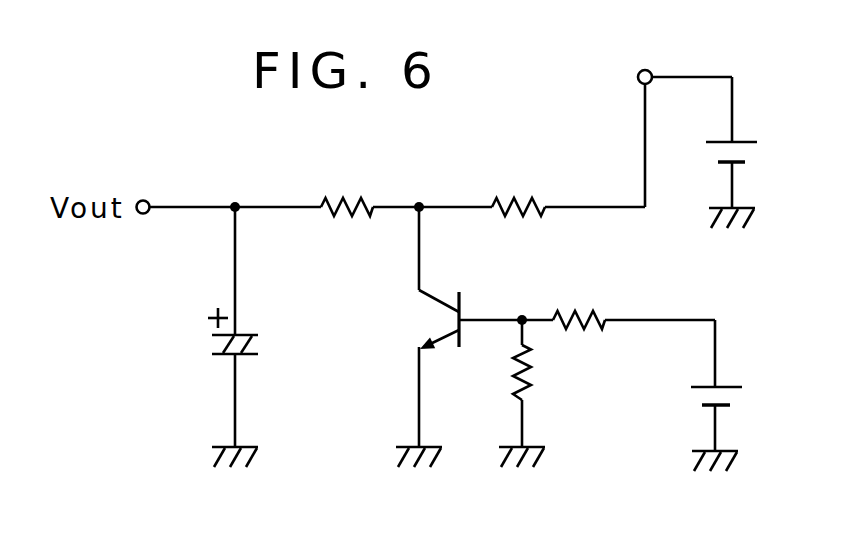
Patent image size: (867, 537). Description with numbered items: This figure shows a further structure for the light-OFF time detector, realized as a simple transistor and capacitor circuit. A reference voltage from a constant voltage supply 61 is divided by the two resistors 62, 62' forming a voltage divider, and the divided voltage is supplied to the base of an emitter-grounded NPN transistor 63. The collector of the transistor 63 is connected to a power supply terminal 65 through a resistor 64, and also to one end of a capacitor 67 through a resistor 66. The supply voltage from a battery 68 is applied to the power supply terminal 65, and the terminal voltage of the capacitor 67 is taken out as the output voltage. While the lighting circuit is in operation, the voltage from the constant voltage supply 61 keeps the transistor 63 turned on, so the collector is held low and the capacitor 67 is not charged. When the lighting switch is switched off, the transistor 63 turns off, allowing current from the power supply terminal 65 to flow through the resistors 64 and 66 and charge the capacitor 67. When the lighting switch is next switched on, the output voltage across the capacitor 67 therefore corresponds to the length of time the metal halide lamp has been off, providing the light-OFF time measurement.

The constant voltage supply 61 is at (733, 386).
The resistor 62 is at (592, 291).
The resistor 62' is at (562, 383).
The emitter-grounded NPN transistor 63 is at (462, 302).
The resistor 64 is at (537, 200).
The power supply terminal 65 is at (641, 70).
The resistor 66 is at (363, 200).
The capacitor 67 is at (248, 327).
The battery 68 is at (745, 140).